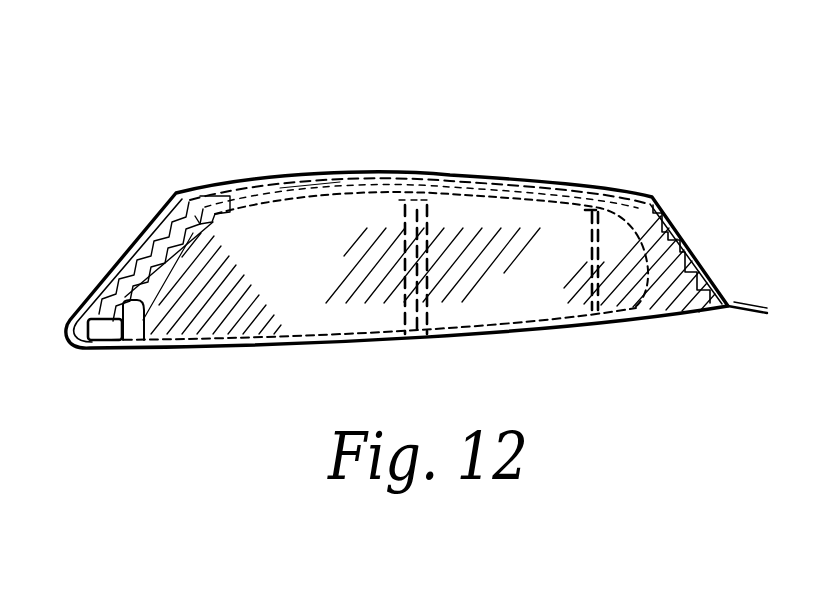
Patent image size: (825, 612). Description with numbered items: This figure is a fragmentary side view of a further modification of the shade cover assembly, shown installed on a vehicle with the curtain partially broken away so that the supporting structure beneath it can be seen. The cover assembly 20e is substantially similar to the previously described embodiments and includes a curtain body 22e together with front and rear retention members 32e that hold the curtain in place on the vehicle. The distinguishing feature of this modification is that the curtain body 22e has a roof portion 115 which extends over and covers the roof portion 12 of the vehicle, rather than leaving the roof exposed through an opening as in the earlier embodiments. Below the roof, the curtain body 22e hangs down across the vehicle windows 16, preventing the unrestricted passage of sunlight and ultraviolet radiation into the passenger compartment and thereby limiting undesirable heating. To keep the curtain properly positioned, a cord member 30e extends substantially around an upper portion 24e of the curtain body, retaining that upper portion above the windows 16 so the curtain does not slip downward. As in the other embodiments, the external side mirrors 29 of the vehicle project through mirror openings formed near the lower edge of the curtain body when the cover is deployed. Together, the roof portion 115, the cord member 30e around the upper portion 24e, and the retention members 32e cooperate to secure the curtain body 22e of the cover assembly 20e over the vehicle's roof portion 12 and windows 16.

The roof portion 12 is at (418, 175).
The windows 16 is at (557, 285).
The cover assembly 20e is at (311, 344).
The curtain body 22e is at (462, 303).
The upper portion 24e is at (581, 200).
The external side mirrors 29 is at (131, 332).
The cord member 30e is at (200, 195).
The front and rear retention members 32e is at (708, 273).
The roof portion 115 is at (310, 177).